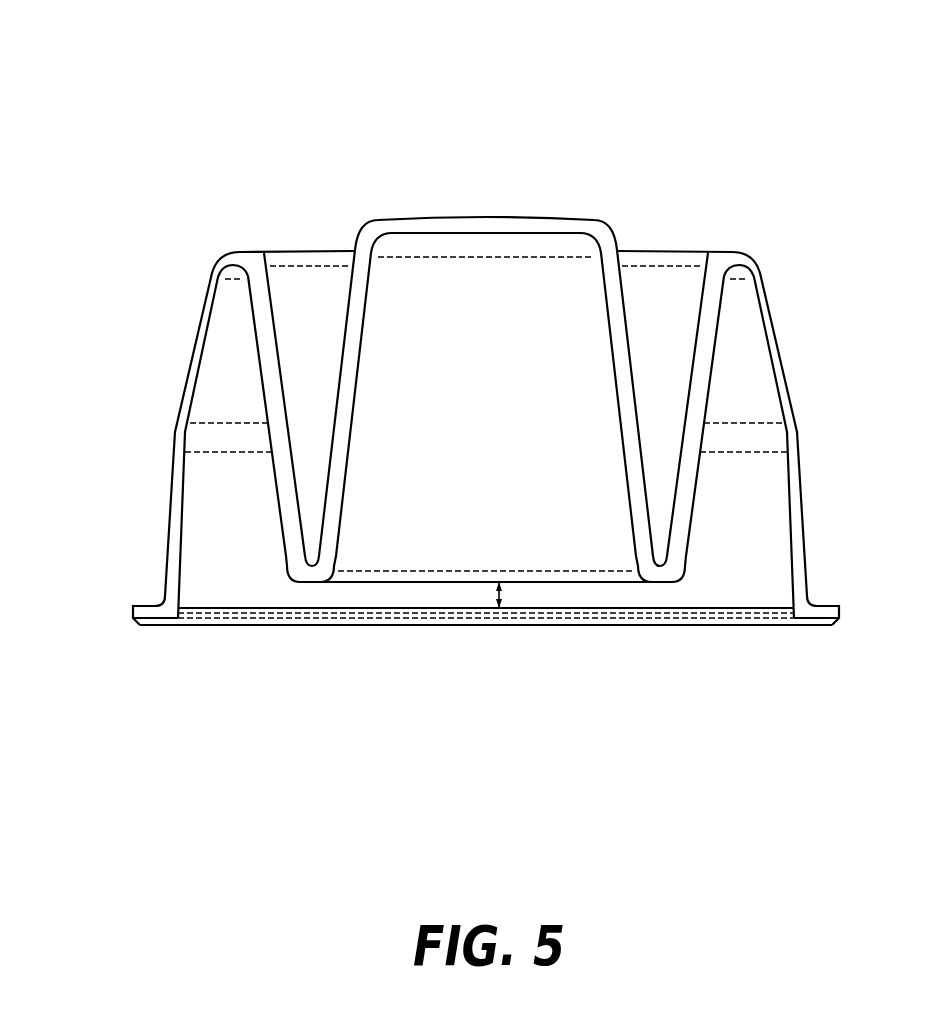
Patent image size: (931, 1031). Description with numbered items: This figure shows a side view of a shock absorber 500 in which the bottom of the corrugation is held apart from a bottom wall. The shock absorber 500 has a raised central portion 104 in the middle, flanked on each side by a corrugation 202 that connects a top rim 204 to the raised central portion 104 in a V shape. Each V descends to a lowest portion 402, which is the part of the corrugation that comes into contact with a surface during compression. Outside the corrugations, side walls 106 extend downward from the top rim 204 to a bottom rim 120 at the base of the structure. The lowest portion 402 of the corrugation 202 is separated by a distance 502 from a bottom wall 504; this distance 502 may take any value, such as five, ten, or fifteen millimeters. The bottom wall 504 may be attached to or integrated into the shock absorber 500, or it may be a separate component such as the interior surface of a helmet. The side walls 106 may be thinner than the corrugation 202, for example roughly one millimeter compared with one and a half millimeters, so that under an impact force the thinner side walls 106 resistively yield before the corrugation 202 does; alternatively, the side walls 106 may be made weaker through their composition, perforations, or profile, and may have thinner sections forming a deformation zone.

The shock absorber 500 is at (297, 70).
The central portion 104 is at (497, 217).
The side walls 106 is at (195, 341).
The bottom rim 120 is at (150, 606).
The corrugation 202 is at (300, 313).
The top rim 204 is at (741, 251).
The lowest portion 402 is at (687, 550).
The distance 502 is at (497, 596).
The bottom wall 504 is at (648, 627).